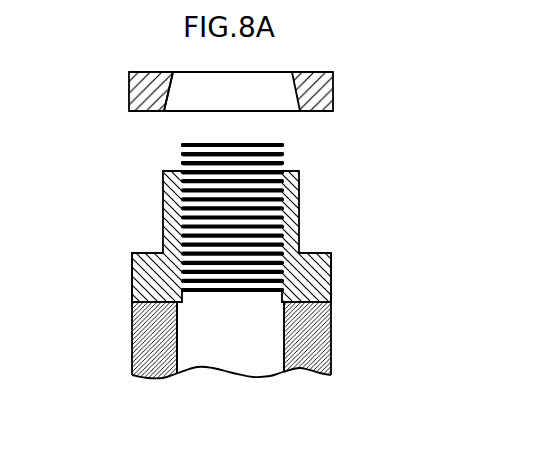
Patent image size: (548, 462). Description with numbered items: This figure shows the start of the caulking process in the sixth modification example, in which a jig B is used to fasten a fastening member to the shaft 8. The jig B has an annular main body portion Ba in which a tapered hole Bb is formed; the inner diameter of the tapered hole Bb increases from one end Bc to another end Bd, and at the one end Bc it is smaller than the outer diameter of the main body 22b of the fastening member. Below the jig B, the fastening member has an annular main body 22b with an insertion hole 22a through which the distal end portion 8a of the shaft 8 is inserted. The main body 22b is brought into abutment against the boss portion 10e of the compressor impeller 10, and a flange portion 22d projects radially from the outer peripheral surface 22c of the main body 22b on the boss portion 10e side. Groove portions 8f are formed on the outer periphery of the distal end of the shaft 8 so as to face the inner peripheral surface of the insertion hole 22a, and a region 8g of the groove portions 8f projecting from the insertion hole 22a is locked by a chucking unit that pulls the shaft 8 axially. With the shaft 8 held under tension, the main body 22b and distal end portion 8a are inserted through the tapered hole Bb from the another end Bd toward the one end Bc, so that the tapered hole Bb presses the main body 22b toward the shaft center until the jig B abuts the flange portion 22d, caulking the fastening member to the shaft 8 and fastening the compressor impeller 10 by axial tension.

The jig B is at (333, 85).
The main body portion Ba is at (333, 78).
The tapered hole Bb is at (172, 89).
The one end Bc is at (195, 70).
The another end Bd is at (283, 112).
The outer peripheral surface 22c is at (163, 215).
The main body 22b is at (299, 171).
The flange portion 22d is at (331, 273).
The insertion hole 22a is at (188, 302).
The compressor impeller 10 is at (331, 358).
The boss portion 10e is at (331, 327).
The shaft 8 is at (233, 355).
The distal end portion 8a is at (200, 143).
The region 8g is at (182, 162).
The groove portions 8f is at (240, 292).